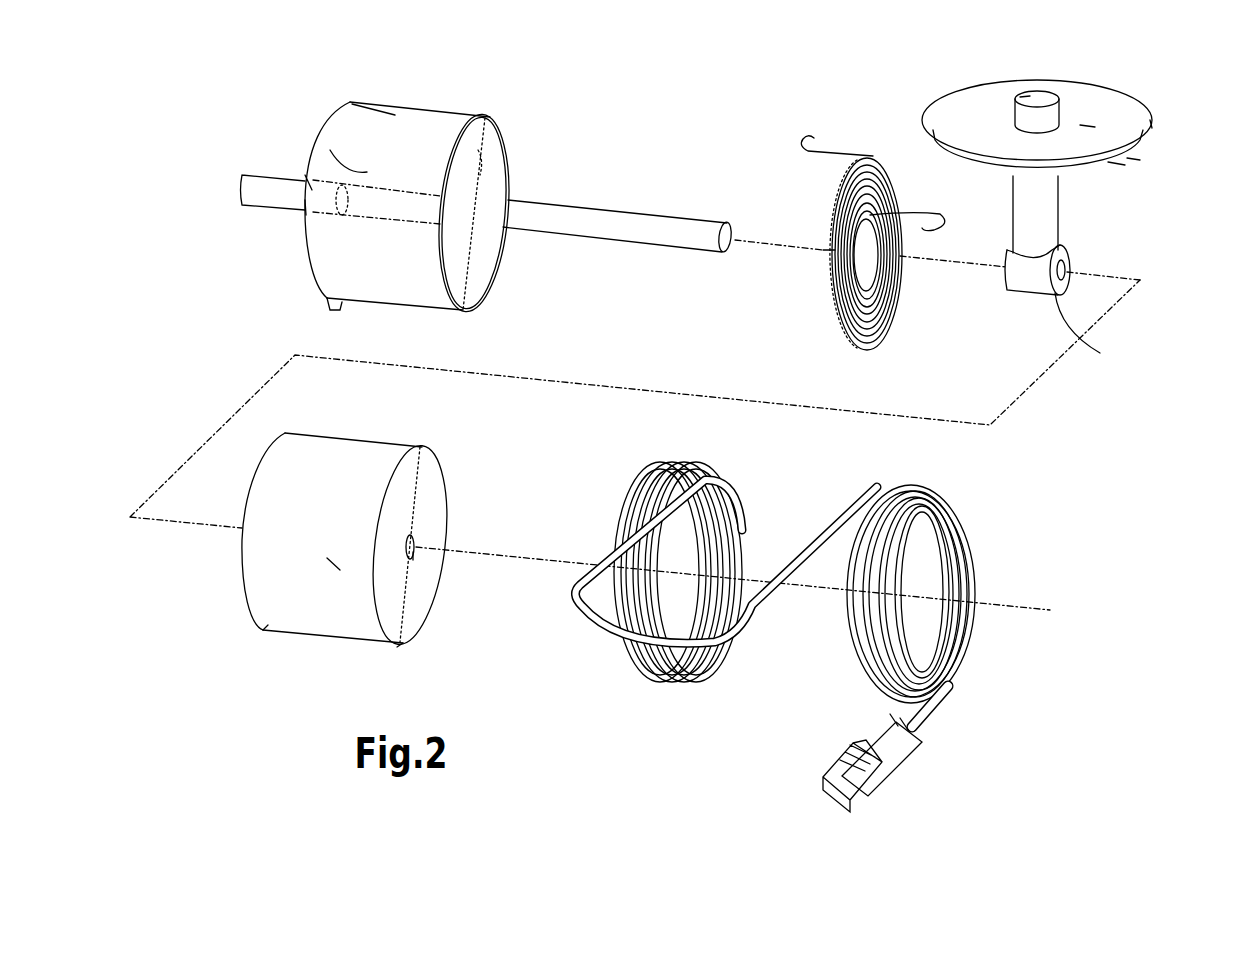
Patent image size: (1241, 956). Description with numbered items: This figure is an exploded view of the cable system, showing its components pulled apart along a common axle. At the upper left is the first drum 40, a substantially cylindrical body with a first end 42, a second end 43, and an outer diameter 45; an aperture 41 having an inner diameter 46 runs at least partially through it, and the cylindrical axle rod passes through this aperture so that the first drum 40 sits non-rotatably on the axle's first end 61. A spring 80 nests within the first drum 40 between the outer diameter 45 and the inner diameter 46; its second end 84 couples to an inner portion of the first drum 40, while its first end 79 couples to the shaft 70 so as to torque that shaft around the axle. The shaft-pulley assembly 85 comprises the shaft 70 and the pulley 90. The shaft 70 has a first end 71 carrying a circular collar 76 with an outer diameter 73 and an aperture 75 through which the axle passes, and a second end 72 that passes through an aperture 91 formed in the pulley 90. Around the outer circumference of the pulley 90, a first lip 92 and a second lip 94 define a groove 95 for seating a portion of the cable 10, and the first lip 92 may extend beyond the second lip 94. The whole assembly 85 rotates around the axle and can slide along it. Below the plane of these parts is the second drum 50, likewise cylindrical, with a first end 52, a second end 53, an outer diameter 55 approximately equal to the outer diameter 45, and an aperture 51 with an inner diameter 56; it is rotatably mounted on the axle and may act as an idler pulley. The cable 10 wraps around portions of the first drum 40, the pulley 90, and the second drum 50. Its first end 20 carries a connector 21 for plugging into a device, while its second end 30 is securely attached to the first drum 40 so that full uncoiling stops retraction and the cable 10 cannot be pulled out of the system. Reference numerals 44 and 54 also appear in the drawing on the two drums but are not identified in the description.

The cable 10 is at (877, 490).
The first end 20 is at (910, 772).
The connector 21 is at (830, 803).
The second end 30 is at (347, 301).
The first drum 40 is at (332, 237).
The aperture 41 is at (303, 210).
The first end 42 is at (348, 108).
The second end 43 is at (482, 118).
The side wall of motor 44 is at (367, 172).
The outer diameter 45 is at (508, 162).
The inner diameter 46 is at (307, 183).
The second drum 50 is at (422, 500).
The aperture 51 is at (413, 558).
The first end 52 is at (263, 630).
The second end 53 is at (397, 647).
The drum body 54 is at (327, 558).
The outer diameter 55 is at (418, 478).
The inner diameter 56 is at (414, 538).
The first end 61 is at (232, 193).
The shaft 70 is at (1037, 100).
The first end 71 is at (1032, 270).
The second end 72 is at (1018, 95).
The outer diameter 73 is at (1093, 325).
The aperture 75 is at (1068, 268).
The collar 76 is at (1063, 247).
The first end 79 is at (938, 215).
The spring 80 is at (897, 304).
The second end 84 is at (818, 137).
The shaft-pulley assembly 85 is at (915, 97).
The pulley 90 is at (1117, 118).
The aperture 91 is at (1088, 127).
The first lip 92 is at (1152, 128).
The second lip 94 is at (1127, 158).
The groove 95 is at (1108, 162).